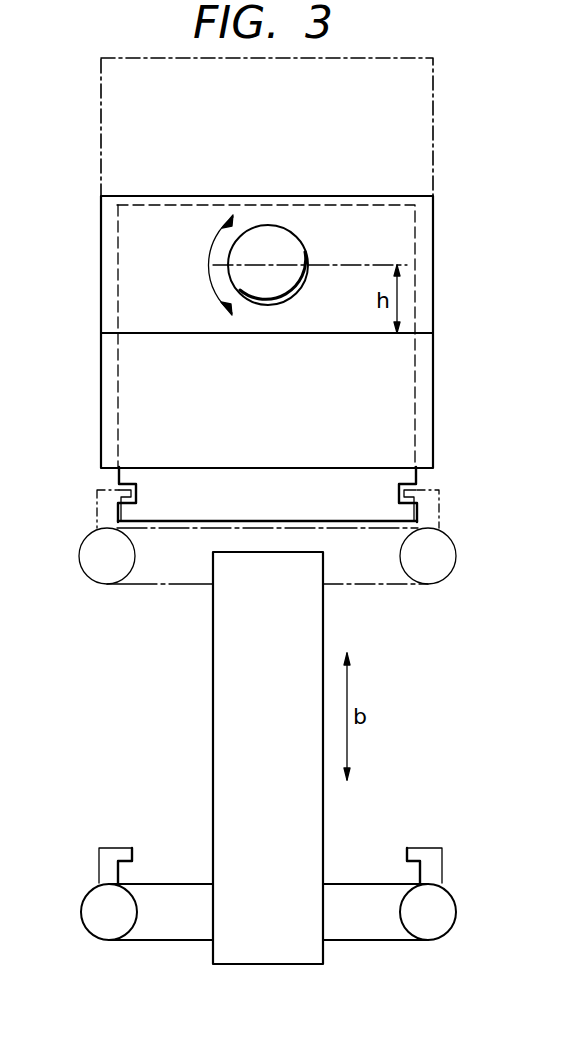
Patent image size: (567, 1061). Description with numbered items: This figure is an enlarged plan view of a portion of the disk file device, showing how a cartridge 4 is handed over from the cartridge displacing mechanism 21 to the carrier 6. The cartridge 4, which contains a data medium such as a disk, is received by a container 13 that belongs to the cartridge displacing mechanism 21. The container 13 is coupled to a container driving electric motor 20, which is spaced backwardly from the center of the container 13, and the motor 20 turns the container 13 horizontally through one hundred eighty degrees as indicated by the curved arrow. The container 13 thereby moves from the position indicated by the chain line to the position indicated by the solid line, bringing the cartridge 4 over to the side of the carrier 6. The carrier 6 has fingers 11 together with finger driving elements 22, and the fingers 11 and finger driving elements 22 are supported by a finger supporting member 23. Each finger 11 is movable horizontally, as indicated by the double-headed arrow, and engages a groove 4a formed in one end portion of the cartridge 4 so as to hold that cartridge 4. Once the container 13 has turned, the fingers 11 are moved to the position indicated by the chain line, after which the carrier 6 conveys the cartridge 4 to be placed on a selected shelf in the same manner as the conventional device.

The cartridge 4 is at (370, 522).
The groove 4a is at (120, 492).
The carrier 6 is at (213, 690).
The finger 11 is at (112, 856).
The container 13 is at (433, 368).
The container driving electric motor 20 is at (303, 240).
The cartridge displacing mechanism 21 is at (435, 270).
The finger driving element 22 is at (81, 925).
The finger supporting member 23 is at (181, 941).